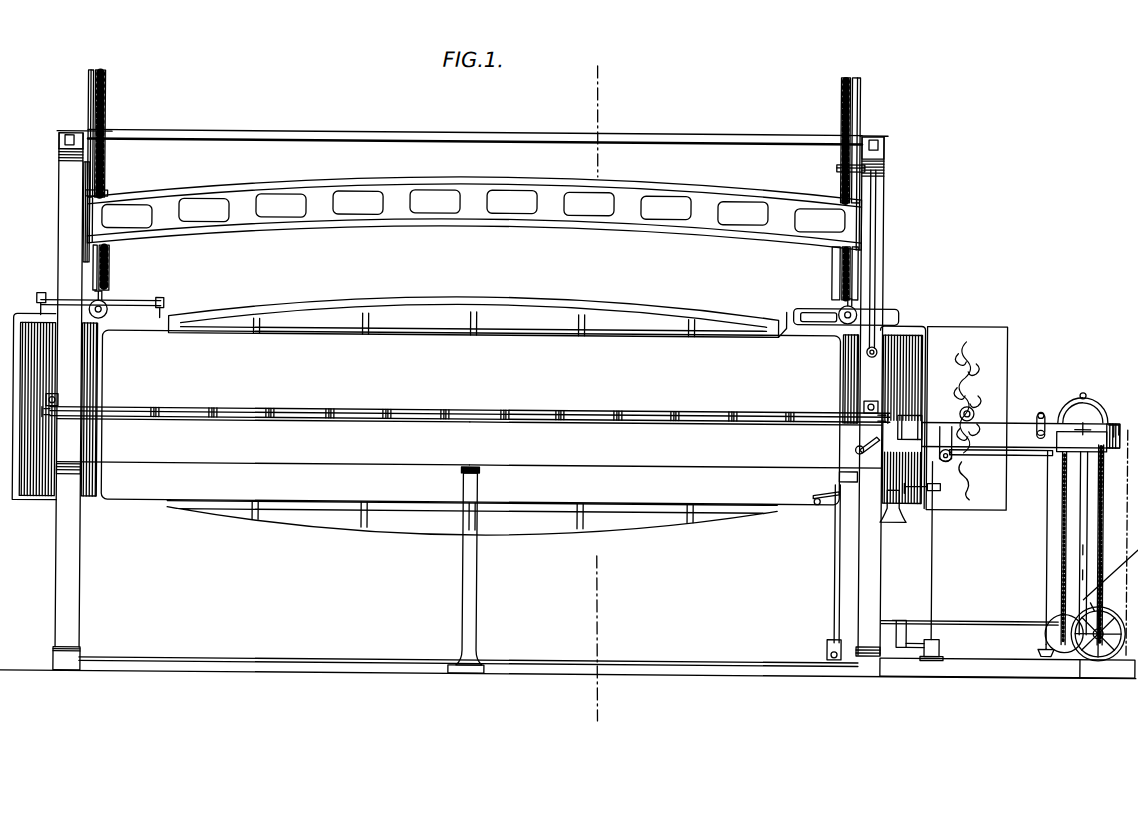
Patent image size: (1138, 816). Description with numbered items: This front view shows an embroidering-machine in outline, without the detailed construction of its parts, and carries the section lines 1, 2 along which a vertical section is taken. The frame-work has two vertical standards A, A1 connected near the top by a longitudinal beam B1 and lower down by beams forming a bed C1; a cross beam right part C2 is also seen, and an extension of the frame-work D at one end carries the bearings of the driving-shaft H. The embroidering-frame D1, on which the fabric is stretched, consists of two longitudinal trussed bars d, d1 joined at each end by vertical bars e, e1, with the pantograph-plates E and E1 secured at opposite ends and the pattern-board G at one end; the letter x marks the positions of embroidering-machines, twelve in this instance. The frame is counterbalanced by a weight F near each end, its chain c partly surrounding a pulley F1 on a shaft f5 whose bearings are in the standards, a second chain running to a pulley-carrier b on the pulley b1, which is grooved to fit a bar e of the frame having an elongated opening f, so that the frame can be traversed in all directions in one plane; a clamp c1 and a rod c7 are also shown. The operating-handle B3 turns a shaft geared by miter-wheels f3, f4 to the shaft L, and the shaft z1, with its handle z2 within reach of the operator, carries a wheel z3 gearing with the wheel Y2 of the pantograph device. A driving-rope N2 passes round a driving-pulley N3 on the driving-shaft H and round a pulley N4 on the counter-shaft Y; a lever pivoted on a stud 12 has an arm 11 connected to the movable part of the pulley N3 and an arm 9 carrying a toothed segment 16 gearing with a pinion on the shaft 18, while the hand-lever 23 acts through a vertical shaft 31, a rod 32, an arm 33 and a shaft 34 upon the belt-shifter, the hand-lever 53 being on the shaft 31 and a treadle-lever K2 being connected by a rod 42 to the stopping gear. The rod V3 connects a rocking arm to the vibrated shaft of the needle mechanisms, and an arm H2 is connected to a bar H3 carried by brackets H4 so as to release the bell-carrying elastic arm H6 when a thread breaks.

The section line 1 is at (598, 115).
The section line 2 is at (590, 646).
The vertical standard A is at (997, 407).
The vertical standard A1 is at (79, 400).
The longitudinal beam B1 is at (474, 212).
The operating-handle B3 is at (1045, 402).
The bed C1 is at (263, 442).
The cross beam right part C2 is at (675, 445).
The extension of the frame-work D is at (1124, 542).
The embroidering-frame D1 is at (470, 417).
The pantograph-plate E is at (902, 419).
The pantograph-plate E1 is at (37, 408).
The weight F is at (110, 265).
The pulley F1 is at (104, 105).
The pattern-board G is at (966, 419).
The driving-shaft H is at (1091, 610).
The arm H2 is at (836, 588).
The bar H3 is at (814, 494).
The brackets H4 is at (840, 471).
The elastic arm H6 is at (900, 512).
The treadle-lever K2 is at (1035, 649).
The shaft L is at (1021, 426).
The driving-rope N2 is at (1104, 488).
The driving-pulley N3 is at (1108, 616).
The pulley N4 is at (1080, 391).
The counter-shaft Y is at (1095, 405).
The wheel Y2 is at (462, 395).
The rod V3 is at (861, 442).
The pulley-carrier b is at (106, 303).
The pulley b1 is at (473, 312).
The chain c is at (86, 92).
The clamp c1 is at (101, 186).
The rod c7 is at (875, 292).
The longitudinal trussed bar d is at (474, 316).
The longitudinal trussed bar d1 is at (472, 519).
The vertical bar e is at (140, 303).
The vertical bar e1 is at (98, 372).
The elongated opening f is at (437, 310).
The miter-wheel f3 is at (1113, 422).
The miter-wheel f4 is at (1081, 425).
The shaft f5 is at (475, 131).
The positions of embroidering-machines x is at (471, 406).
The shaft z1 is at (470, 406).
The handle z2 is at (922, 412).
The wheel z3 is at (465, 407).
The arm 9 is at (1085, 543).
The arm 11 is at (1089, 577).
The stud 12 is at (1088, 552).
The toothed segment 16 is at (1069, 548).
The shaft 18 is at (1010, 451).
The hand-lever 23 is at (953, 437).
The vertical shaft 31 is at (934, 552).
The rod 32 is at (915, 638).
The arm 33 is at (895, 633).
The shaft 34 is at (969, 621).
The rod 42 is at (1048, 549).
The hand-lever 53 is at (934, 486).